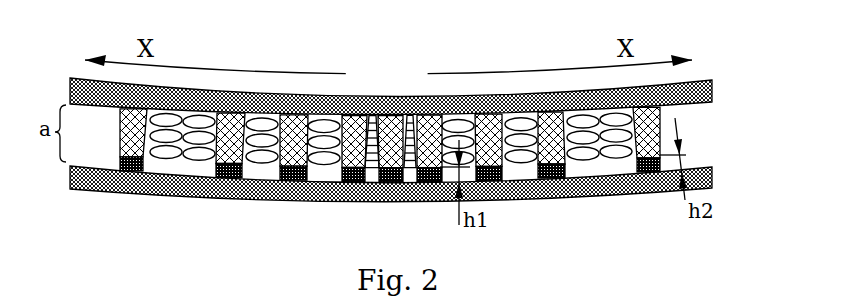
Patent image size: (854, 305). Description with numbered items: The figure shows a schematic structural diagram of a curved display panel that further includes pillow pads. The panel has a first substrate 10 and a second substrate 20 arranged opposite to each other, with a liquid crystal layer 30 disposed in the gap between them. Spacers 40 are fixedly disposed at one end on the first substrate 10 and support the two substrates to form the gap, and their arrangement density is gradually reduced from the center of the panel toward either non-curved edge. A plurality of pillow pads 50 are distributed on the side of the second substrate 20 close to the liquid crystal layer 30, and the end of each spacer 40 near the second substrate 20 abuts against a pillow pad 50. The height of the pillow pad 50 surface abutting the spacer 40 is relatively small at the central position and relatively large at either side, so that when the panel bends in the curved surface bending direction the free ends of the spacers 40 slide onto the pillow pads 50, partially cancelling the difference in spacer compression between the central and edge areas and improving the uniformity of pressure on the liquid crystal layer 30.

The first substrate 10 is at (688, 93).
The second substrate 20 is at (688, 167).
The liquid crystal layer 30 is at (616, 155).
The spacers 40 is at (563, 168).
The pillow pads 50 is at (307, 171).